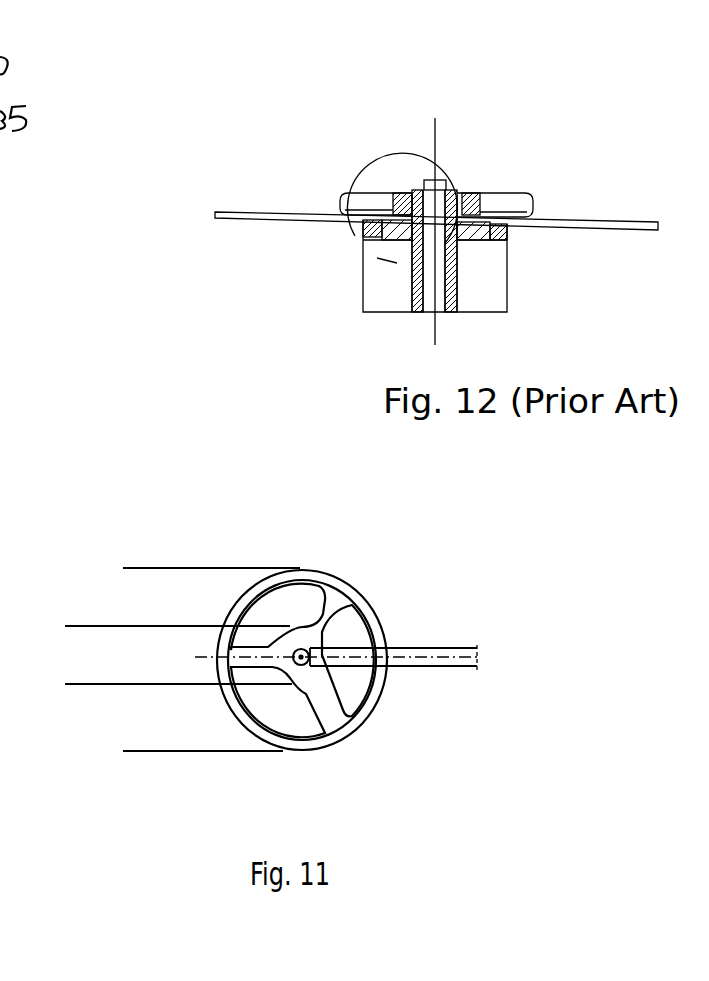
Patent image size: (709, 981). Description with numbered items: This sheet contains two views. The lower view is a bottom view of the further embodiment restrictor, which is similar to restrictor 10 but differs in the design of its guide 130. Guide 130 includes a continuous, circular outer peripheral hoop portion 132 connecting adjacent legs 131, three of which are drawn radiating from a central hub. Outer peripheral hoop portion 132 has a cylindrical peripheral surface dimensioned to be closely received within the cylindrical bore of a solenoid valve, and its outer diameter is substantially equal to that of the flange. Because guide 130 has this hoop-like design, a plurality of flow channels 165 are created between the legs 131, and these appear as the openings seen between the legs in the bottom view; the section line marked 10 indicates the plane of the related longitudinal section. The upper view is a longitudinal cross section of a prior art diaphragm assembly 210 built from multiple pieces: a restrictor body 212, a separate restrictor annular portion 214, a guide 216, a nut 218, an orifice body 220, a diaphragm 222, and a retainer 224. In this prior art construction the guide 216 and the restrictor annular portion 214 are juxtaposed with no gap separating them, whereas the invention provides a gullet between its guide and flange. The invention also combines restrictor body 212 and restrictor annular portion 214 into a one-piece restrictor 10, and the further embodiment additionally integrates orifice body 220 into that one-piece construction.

In FIG. 12, the diaphragm assembly 210 is at (580, 100).
In FIG. 12, the restrictor body 212 is at (418, 193).
In FIG. 12, the restrictor annular portion 214 is at (363, 235).
In FIG. 12, the guide 216 is at (507, 292).
In FIG. 12, the nut 218 is at (482, 193).
In FIG. 12, the orifice body 220 is at (430, 180).
In FIG. 12, the diaphragm 222 is at (573, 222).
In FIG. 12, the retainer 224 is at (333, 195).
In FIG. 11, the guide 130 is at (380, 628).
In FIG. 11, the legs 131 is at (332, 607).
In FIG. 11, the outer peripheral hoop portion 132 is at (377, 703).
In FIG. 11, the flow channels 165 is at (265, 613).
In FIG. 11, the restrictor 10 is at (302, 773).